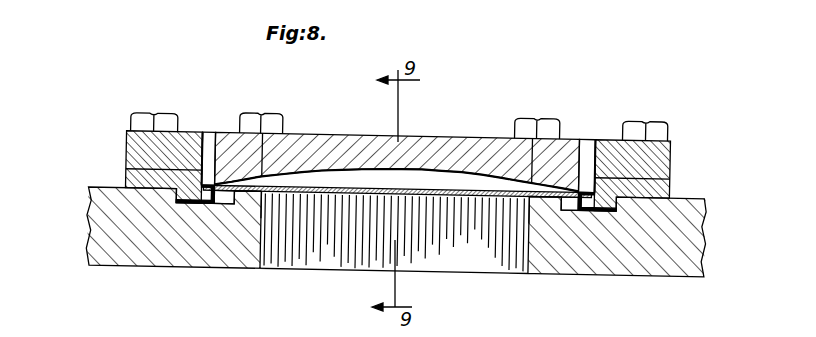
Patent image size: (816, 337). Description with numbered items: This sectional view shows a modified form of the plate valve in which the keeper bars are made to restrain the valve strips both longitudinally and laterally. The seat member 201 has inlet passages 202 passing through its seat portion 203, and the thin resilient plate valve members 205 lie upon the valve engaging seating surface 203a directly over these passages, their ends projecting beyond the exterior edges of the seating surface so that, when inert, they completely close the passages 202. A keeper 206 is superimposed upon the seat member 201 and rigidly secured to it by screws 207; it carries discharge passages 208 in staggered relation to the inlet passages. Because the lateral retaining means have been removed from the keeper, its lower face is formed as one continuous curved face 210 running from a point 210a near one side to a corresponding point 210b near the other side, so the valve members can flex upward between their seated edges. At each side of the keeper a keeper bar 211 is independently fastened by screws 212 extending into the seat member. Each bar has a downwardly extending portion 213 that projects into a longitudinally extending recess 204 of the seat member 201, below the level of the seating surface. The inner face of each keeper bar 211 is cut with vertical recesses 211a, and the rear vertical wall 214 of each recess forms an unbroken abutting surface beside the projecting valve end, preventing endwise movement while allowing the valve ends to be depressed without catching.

The seat member 201 is at (107, 215).
The inlet passages 202 is at (394, 232).
The seat portion 203 is at (263, 207).
The valve engaging seating surface 203a is at (247, 191).
The longitudinally extending recesses 204 is at (220, 198).
The plate valve members 205 is at (337, 187).
The keeper 206 is at (292, 142).
The screws 207 is at (253, 105).
The discharge passages 208 is at (278, 140).
The curved lower face of keeper 210 is at (422, 168).
The end point of curved face 210a is at (230, 180).
The end point of curved face 210b is at (556, 196).
The keeper bars 211 is at (123, 142).
The vertical recesses 211a is at (205, 147).
The screws 212 is at (138, 118).
The downwardly extending portion 213 is at (185, 192).
The rear vertical wall 214 is at (190, 170).